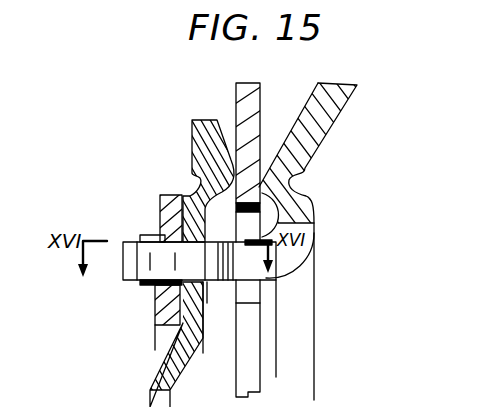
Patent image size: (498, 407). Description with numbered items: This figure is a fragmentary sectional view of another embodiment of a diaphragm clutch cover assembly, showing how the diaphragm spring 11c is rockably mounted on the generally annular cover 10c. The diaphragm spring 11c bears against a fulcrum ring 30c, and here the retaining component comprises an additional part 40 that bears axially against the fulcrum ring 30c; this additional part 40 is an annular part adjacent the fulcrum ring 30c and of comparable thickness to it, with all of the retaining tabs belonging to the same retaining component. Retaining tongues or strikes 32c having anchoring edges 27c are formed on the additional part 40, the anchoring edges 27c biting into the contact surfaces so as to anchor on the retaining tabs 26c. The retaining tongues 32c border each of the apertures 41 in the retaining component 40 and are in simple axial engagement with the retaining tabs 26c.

The cover 10c is at (342, 113).
The diaphragm spring 11c is at (260, 112).
The retaining tab 26c is at (208, 285).
The anchoring edge 27c is at (170, 234).
The fulcrum ring 30c is at (192, 121).
The retaining tongue 32c is at (146, 284).
The additional part 40 is at (160, 193).
The aperture 41 is at (172, 282).